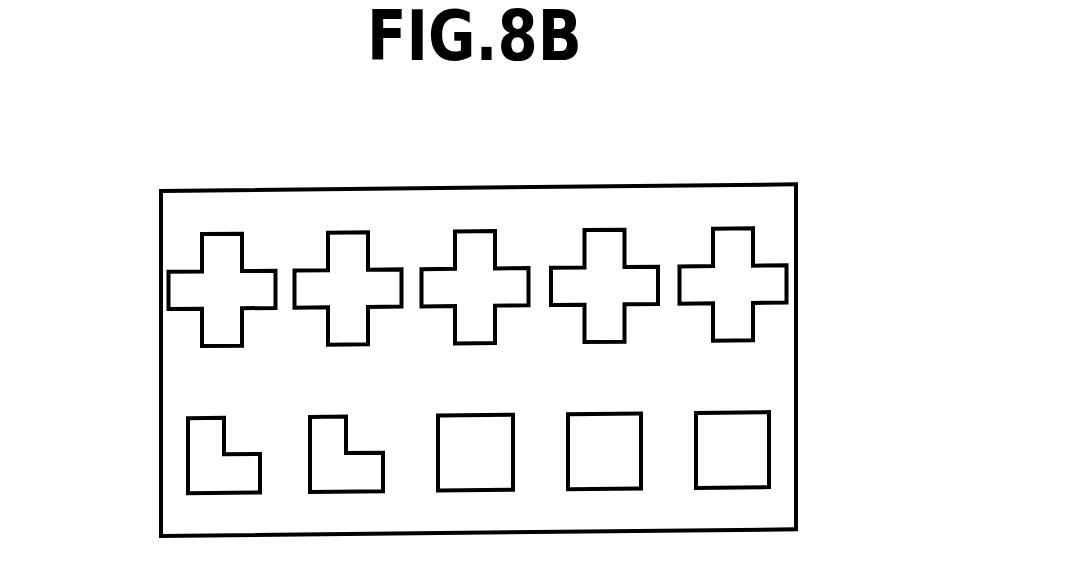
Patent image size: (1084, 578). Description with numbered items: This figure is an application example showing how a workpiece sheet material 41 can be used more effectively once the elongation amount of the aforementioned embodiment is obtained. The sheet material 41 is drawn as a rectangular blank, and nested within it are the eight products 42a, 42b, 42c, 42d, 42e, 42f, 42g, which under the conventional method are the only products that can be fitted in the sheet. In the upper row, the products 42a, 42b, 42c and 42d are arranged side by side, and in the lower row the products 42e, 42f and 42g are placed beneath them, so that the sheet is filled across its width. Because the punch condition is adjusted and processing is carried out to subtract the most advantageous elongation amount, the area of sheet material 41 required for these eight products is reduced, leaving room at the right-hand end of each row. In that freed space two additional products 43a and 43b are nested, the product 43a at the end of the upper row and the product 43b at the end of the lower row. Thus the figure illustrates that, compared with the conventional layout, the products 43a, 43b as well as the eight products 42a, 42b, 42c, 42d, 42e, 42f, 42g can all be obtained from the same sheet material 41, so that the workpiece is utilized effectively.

The sheet material 41 is at (796, 334).
The product 42a is at (195, 271).
The product 42b is at (307, 272).
The product 42c is at (433, 272).
The product 42d is at (565, 269).
The product 43a is at (692, 269).
The product 42e is at (244, 451).
The product 42f is at (360, 452).
The product 42g is at (455, 416).
The product 43b is at (717, 416).